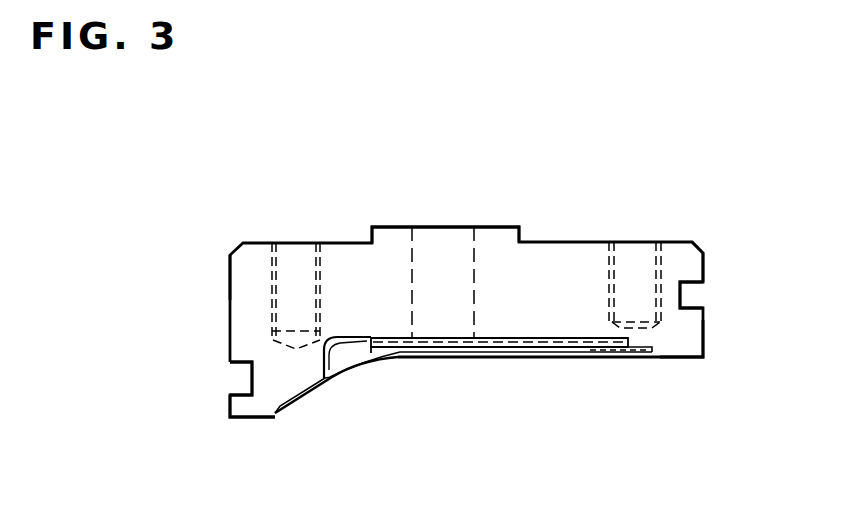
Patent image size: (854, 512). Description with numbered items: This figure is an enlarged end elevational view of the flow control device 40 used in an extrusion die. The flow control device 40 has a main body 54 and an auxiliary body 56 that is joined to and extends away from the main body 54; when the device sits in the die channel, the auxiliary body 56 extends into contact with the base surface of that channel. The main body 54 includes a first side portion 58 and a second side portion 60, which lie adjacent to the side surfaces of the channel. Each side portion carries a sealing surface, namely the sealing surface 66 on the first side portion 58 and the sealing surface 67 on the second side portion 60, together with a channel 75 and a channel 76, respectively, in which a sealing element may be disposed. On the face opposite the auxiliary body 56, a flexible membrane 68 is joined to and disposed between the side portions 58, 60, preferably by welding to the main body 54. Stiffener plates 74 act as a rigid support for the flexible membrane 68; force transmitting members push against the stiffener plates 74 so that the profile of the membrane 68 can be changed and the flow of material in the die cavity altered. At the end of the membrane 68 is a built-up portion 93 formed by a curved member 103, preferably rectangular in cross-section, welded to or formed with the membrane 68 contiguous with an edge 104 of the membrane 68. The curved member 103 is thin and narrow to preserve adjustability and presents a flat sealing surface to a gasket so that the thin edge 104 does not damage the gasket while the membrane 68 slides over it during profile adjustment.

The flow control device 40 is at (516, 316).
The main body 54 is at (398, 262).
The auxiliary body 56 is at (493, 237).
The first side portion 58 is at (243, 279).
The second side portion 60 is at (685, 260).
The sealing surface 66 is at (230, 407).
The sealing surface 67 is at (705, 343).
The flexible membrane 68 is at (380, 357).
The stiffener plate 74 is at (542, 343).
The channel 75 is at (250, 378).
The channel 76 is at (680, 295).
The built-up portion 93 is at (615, 347).
The curved member 103 is at (347, 353).
The edge 104 is at (333, 385).